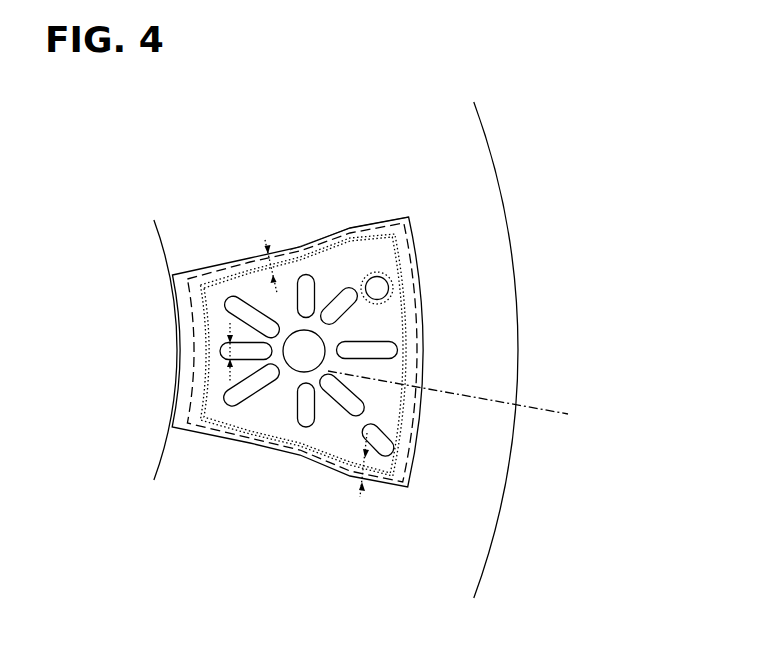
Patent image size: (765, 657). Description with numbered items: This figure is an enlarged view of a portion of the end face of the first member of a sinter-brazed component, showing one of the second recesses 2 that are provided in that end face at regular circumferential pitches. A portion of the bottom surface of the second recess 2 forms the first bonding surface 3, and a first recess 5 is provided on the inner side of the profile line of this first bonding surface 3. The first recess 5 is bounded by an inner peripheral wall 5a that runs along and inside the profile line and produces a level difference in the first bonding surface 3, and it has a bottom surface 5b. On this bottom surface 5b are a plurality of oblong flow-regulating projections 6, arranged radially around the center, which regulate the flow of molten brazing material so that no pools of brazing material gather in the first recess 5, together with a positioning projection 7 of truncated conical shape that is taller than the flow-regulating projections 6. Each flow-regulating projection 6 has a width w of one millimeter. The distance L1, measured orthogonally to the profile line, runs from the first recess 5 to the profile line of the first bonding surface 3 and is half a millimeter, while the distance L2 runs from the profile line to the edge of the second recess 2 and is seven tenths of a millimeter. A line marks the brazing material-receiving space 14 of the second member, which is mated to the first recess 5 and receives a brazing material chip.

The second recess 2 is at (182, 312).
The first bonding surface 3 is at (410, 420).
The first recess 5 is at (332, 436).
The inner peripheral wall 5a is at (403, 287).
The bottom surface 5b is at (343, 270).
The flow-regulating projection 6 is at (295, 405).
The positioning projection 7 is at (380, 293).
The brazing material-receiving space 14 is at (439, 380).
The width of flow-regulating projection w is at (222, 346).
The distance from first recess to profile line L1 is at (378, 485).
The distance from profile line to edge of second recess L2 is at (252, 263).